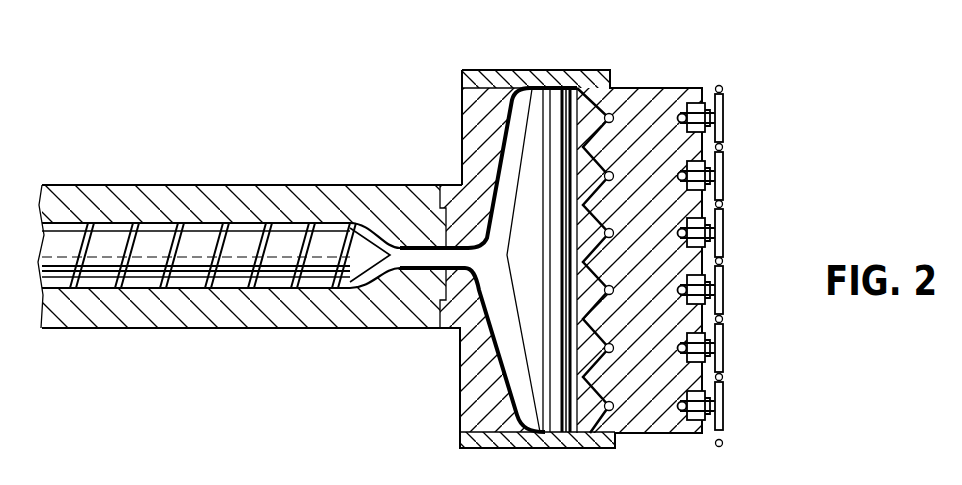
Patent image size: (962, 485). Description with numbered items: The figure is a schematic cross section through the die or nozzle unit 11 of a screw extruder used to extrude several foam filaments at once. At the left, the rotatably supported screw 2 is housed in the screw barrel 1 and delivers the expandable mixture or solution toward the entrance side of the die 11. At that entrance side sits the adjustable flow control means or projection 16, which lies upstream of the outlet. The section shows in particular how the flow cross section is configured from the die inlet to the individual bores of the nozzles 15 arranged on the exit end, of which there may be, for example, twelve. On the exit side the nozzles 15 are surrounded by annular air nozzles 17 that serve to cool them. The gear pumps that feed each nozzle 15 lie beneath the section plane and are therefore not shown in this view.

The screw barrel 1 is at (315, 203).
The screw 2 is at (242, 242).
The die 11 is at (468, 125).
The nozzles 15 is at (722, 175).
The adjustable flow control means 16 is at (558, 103).
The annular air nozzles 17 is at (722, 89).